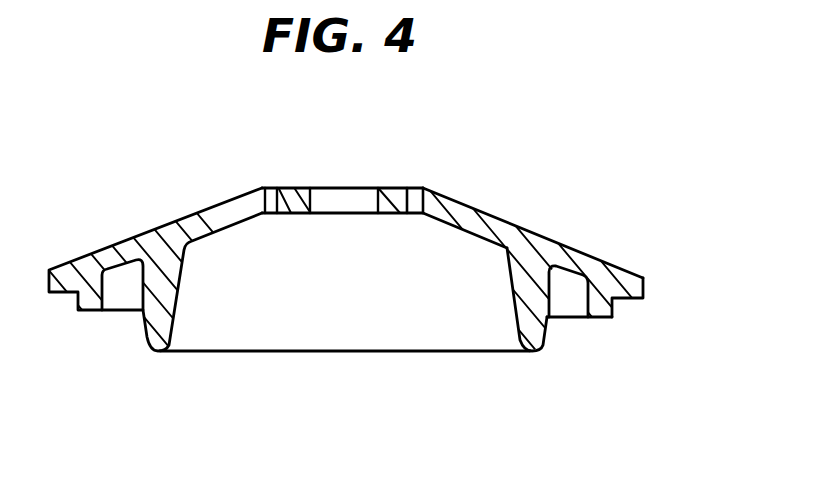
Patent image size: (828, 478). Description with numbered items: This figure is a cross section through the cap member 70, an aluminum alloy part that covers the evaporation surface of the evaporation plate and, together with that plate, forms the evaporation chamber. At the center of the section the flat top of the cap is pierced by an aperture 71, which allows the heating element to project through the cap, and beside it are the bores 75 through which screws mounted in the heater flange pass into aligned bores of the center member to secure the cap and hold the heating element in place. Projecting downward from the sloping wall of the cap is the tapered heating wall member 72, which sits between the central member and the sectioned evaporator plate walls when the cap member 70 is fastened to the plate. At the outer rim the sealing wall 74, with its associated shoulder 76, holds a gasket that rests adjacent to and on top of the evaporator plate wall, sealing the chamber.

The cap member 70 is at (580, 180).
The aperture 71 is at (340, 202).
The tapered heating wall member 72 is at (533, 353).
The sealing wall 74 is at (608, 320).
The bores 75 is at (422, 189).
The shoulder 76 is at (638, 300).